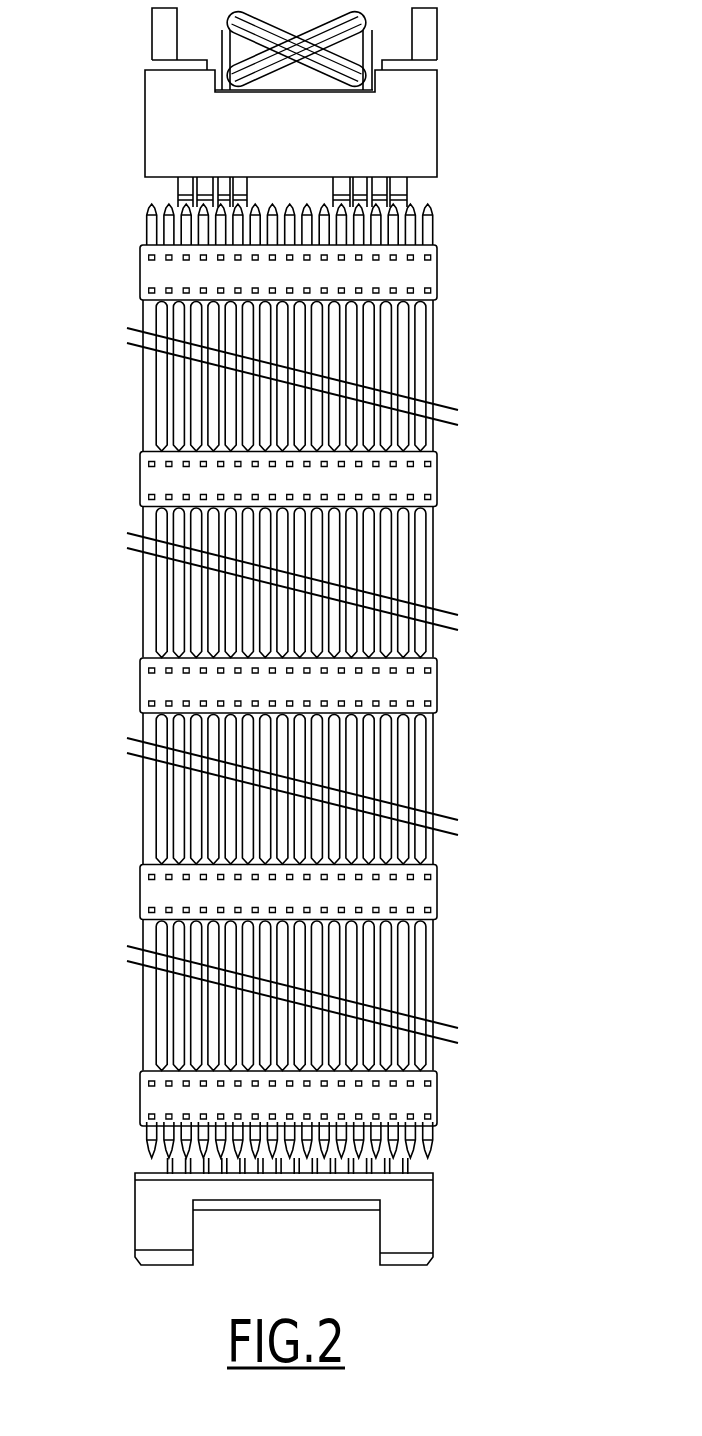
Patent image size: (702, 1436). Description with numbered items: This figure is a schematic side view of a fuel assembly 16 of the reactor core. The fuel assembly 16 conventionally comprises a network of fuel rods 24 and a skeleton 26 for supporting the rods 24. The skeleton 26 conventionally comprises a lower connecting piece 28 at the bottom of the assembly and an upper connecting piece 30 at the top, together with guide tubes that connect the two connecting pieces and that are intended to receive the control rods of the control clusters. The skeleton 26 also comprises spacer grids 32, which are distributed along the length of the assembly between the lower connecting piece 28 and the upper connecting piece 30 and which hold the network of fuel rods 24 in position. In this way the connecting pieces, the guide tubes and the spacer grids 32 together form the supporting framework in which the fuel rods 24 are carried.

The fuel assembly 16 is at (317, 675).
The fuel rods 24 is at (400, 1002).
The skeleton 26 is at (303, 92).
The lower connecting piece 28 is at (405, 1242).
The upper connecting piece 30 is at (165, 142).
The spacer grids 32 is at (147, 683).